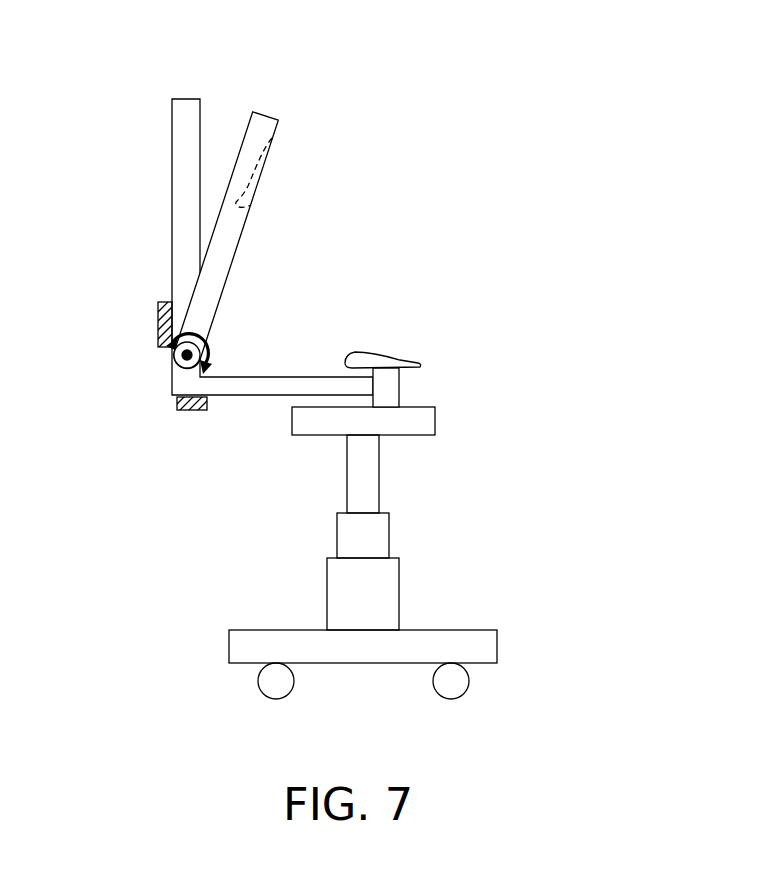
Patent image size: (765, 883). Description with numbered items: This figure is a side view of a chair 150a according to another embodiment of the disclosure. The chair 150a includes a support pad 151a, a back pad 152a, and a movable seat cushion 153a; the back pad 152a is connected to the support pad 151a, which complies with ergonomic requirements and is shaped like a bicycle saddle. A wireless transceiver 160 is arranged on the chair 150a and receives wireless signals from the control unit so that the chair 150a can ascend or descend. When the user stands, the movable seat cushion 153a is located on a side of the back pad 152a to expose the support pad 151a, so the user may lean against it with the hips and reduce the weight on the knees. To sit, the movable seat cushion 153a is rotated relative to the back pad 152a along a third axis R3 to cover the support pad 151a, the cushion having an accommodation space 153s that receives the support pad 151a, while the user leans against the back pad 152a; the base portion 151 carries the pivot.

The chair 150a is at (670, 619).
The support arm / fixing block 151 is at (175, 403).
The support pad 151a is at (420, 365).
The back pad 152a is at (178, 250).
The movable seat cushion 153a is at (271, 198).
The slot of pivotable bar 153s is at (260, 185).
The wireless transceiver 160 is at (157, 322).
The third axis R3 is at (172, 362).